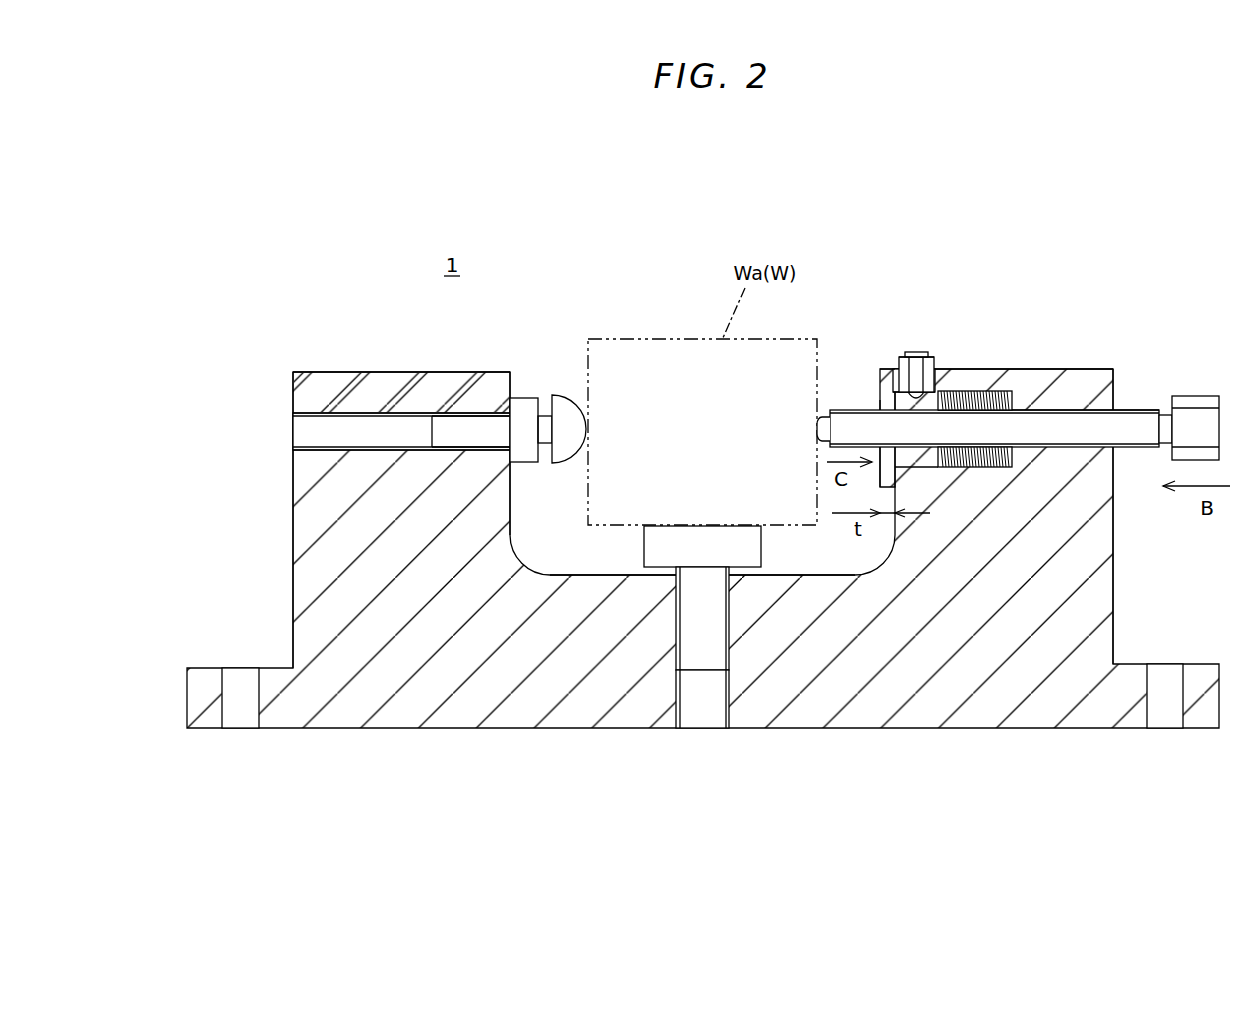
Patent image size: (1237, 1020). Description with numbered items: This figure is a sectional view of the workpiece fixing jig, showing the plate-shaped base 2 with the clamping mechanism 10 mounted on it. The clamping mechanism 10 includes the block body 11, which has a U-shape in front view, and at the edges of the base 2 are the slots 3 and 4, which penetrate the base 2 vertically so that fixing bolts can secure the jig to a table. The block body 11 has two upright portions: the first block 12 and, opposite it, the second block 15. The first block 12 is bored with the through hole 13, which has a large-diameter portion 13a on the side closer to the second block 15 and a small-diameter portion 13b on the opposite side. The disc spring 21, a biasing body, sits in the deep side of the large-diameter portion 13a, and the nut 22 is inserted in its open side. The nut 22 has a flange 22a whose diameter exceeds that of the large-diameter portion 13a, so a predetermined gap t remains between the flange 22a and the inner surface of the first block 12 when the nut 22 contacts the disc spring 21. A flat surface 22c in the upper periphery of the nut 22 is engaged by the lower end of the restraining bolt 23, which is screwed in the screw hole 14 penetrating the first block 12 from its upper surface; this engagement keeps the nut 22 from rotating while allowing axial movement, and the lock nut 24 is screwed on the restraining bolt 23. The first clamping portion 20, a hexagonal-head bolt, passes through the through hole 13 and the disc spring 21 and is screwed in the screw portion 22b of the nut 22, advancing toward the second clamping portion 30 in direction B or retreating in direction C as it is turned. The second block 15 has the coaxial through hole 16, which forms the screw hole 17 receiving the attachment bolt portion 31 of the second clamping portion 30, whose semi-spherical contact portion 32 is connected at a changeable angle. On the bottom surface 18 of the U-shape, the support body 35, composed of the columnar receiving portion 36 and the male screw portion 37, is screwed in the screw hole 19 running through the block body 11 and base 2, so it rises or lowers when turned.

The base 2 is at (970, 730).
The slot 3 is at (1165, 678).
The slot 4 is at (238, 678).
The clamping mechanism 10 is at (1014, 331).
The block body 11 is at (240, 480).
The first block 12 is at (1113, 592).
The through hole 13 is at (988, 368).
The large-diameter portion 13a is at (992, 402).
The small-diameter portion 13b is at (1094, 417).
The screw hole 14 is at (925, 388).
The second block 15 is at (293, 520).
The through hole 16 is at (368, 425).
The screw hole 17 is at (412, 420).
The bottom surface 18 is at (813, 574).
The screw hole 19 is at (680, 695).
The first clamping portion 20 is at (1188, 395).
The disc spring 21 is at (1000, 393).
The nut 22 is at (893, 391).
The flange 22a is at (880, 375).
The screw portion 22b is at (878, 415).
The flat surface 22c is at (905, 385).
The restraining bolt 23 is at (918, 352).
The lock nut 24 is at (905, 360).
The second clamping portion 30 is at (577, 376).
The attachment bolt portion 31 is at (527, 403).
The semi-spherical contact portion 32 is at (575, 410).
The support body 35 is at (722, 610).
The receiving portion 36 is at (700, 528).
The male screw portion 37 is at (720, 625).